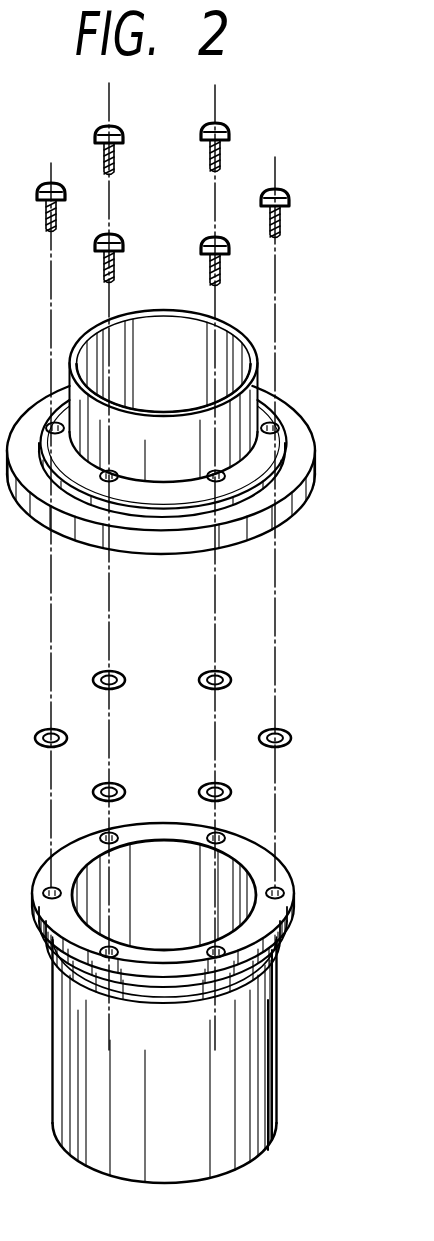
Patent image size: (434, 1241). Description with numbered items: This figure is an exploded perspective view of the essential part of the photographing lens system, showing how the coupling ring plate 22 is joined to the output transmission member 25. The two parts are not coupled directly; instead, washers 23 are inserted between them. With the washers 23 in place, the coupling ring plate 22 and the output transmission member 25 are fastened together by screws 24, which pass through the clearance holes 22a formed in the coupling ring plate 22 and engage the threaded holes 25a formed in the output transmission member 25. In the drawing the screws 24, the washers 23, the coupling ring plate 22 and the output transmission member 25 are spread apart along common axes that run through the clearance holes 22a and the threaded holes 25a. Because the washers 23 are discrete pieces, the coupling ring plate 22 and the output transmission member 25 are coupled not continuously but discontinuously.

The coupling ring plate 22 is at (298, 476).
The clearance holes 22a is at (282, 418).
The washers 23 is at (292, 738).
The screws 24 is at (287, 198).
The output transmission member 25 is at (260, 1023).
The threaded holes 25a is at (290, 890).